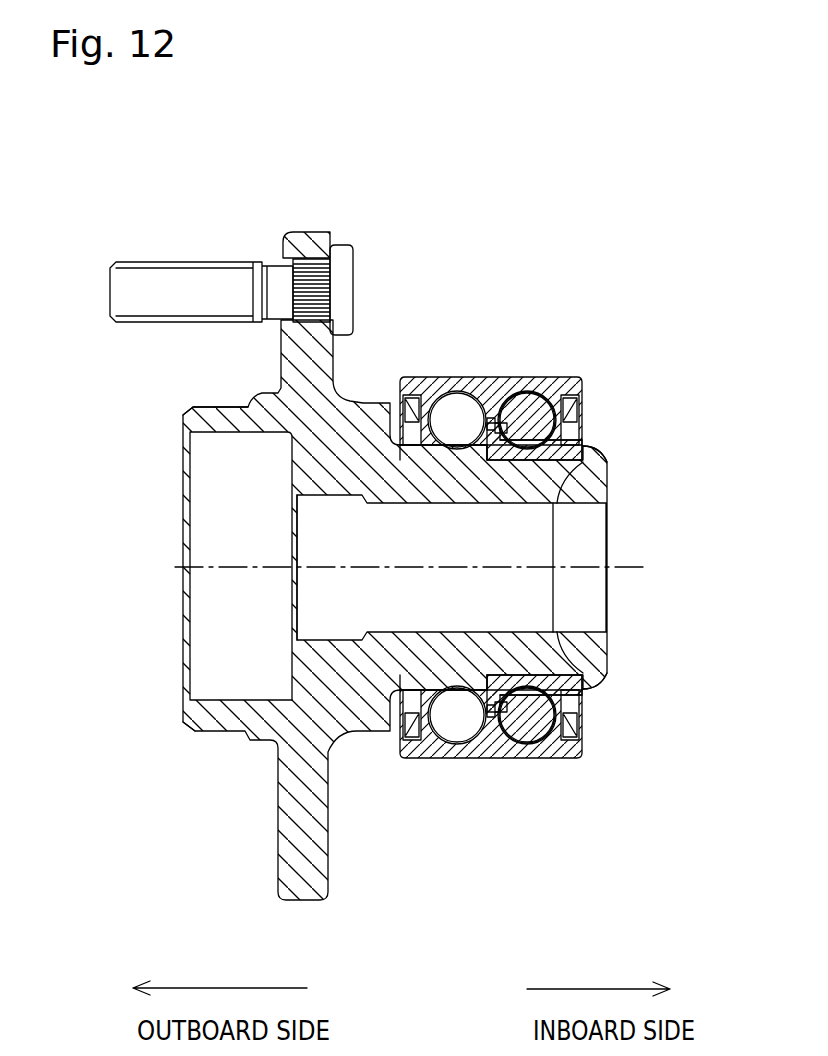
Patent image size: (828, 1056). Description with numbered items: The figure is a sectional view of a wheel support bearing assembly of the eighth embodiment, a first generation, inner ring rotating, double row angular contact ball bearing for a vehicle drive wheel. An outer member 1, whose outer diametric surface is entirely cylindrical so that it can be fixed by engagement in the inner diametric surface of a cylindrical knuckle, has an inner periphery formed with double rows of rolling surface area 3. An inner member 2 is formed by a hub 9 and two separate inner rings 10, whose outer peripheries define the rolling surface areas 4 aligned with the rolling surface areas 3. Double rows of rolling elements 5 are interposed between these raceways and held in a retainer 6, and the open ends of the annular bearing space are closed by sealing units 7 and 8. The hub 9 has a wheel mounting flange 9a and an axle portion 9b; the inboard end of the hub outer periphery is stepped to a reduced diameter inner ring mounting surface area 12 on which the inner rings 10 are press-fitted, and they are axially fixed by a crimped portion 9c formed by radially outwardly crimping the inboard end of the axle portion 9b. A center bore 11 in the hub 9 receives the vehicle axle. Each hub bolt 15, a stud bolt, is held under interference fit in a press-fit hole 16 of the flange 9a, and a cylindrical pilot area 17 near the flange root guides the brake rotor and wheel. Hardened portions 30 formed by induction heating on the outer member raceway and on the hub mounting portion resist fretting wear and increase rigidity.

The outer member 1 is at (499, 771).
The inner member 2 is at (83, 470).
The rolling surface area 3 is at (450, 757).
The rolling surface area 4 is at (560, 700).
The rolling element 5 is at (410, 756).
The roller retainer 6 is at (486, 700).
The sealing unit 7 is at (404, 390).
The sealing unit 8 is at (573, 410).
The hub 9 is at (320, 462).
The wheel mounting flange 9a is at (312, 232).
The axle portion 9b is at (527, 472).
The crimped portion 9c is at (590, 467).
The inner ring 10 is at (510, 495).
The center bore 11 is at (420, 633).
The inner ring mounting surface area 12 is at (582, 437).
The hub bolt 15 is at (185, 262).
The press-fit hole 16 is at (300, 272).
The cylindrical pilot area 17 is at (183, 418).
The hardened portion 30 is at (510, 473).